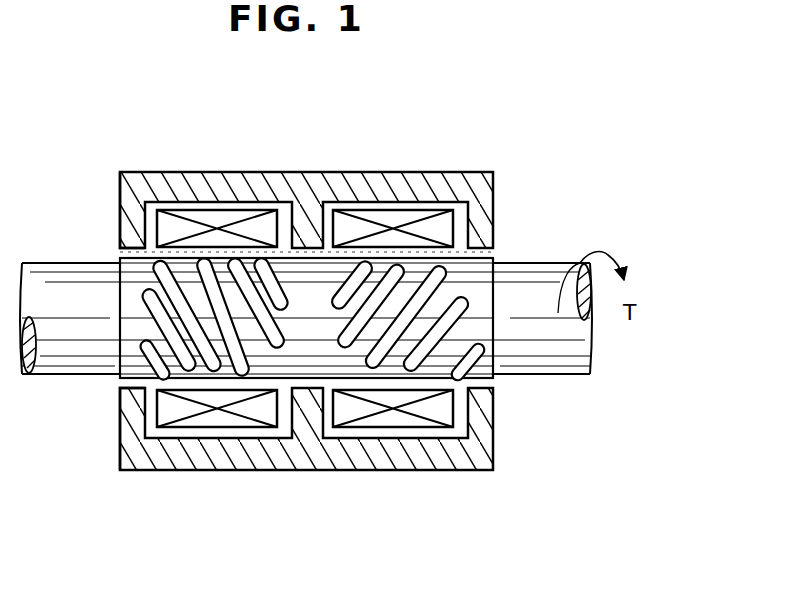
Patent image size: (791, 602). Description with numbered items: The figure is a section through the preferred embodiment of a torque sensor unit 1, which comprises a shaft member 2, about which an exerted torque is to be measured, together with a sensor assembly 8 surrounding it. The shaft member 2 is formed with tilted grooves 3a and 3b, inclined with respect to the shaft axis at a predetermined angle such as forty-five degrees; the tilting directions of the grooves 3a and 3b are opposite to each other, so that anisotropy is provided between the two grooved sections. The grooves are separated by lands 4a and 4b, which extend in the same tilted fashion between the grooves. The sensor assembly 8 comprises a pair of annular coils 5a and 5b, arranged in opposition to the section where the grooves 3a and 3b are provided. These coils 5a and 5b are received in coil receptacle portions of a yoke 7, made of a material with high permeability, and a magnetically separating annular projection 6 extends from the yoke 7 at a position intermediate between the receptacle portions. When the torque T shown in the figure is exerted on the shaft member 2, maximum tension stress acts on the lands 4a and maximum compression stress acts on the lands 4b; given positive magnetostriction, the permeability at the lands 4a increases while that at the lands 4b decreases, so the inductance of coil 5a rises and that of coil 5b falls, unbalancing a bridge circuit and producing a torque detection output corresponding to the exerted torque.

The torque sensor unit 1 is at (500, 168).
The shaft member 2 is at (540, 274).
The tilted groove 3a is at (482, 372).
The tilted groove 3b is at (140, 371).
The land 4a is at (433, 378).
The land 4b is at (153, 392).
The annular coil 5a is at (413, 216).
The annular coil 5b is at (165, 221).
The magnetically separating annular projection 6 is at (128, 253).
The yoke 7 is at (287, 182).
The sensor assembly 8 is at (116, 194).